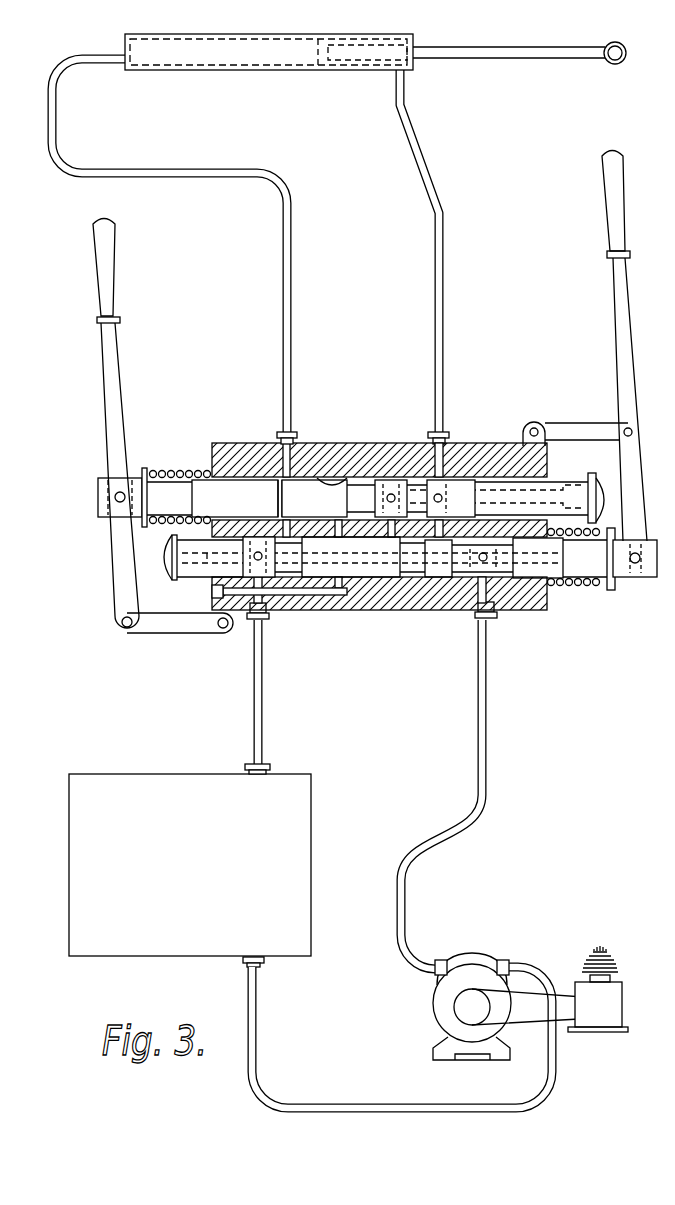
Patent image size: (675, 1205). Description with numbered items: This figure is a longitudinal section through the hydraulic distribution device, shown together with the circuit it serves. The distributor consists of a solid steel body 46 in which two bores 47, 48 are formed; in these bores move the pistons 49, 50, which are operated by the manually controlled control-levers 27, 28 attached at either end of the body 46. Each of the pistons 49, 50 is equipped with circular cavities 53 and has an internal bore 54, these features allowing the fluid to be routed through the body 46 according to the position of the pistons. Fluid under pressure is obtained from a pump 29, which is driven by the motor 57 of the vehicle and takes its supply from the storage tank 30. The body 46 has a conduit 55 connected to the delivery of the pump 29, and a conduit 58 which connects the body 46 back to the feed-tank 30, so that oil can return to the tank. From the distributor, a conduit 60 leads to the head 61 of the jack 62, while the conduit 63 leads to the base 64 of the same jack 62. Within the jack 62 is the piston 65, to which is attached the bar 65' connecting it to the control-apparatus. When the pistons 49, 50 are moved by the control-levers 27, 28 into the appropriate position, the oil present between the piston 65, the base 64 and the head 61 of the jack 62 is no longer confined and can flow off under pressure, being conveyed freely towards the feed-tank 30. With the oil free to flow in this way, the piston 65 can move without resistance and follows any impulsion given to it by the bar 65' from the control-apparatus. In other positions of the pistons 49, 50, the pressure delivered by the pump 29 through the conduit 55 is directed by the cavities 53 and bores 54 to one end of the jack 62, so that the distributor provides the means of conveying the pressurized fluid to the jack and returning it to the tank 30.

The control-lever 27 is at (609, 189).
The control-lever 28 is at (105, 262).
The pump 29 is at (471, 966).
The storage tank 30 is at (190, 865).
The body 46 is at (394, 594).
The bore 47 is at (410, 589).
The bore 48 is at (351, 468).
The piston 49 is at (440, 573).
The piston 50 is at (360, 493).
The circular cavity 53 is at (390, 480).
The internal bore 54 is at (307, 597).
The conduit 55 is at (487, 613).
The motor 57 is at (614, 991).
The conduit 58 is at (251, 619).
The conduit 60 is at (447, 436).
The head 61 is at (412, 36).
The jack 62 is at (275, 71).
The conduit 63 is at (302, 438).
The base 64 is at (126, 71).
The piston 65 is at (362, 79).
The bar 65' is at (519, 73).